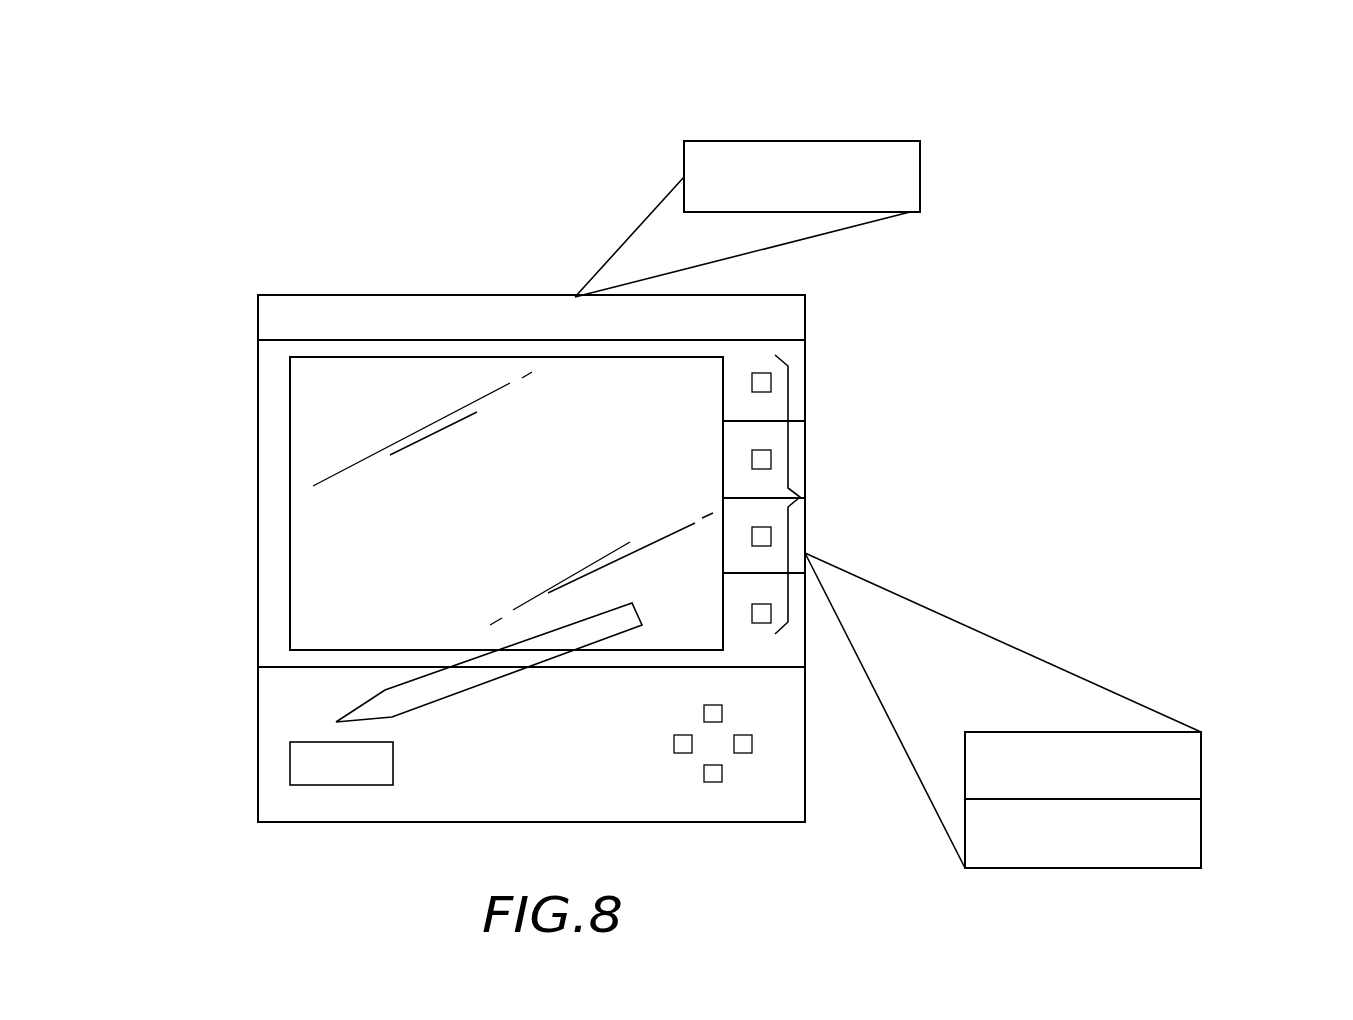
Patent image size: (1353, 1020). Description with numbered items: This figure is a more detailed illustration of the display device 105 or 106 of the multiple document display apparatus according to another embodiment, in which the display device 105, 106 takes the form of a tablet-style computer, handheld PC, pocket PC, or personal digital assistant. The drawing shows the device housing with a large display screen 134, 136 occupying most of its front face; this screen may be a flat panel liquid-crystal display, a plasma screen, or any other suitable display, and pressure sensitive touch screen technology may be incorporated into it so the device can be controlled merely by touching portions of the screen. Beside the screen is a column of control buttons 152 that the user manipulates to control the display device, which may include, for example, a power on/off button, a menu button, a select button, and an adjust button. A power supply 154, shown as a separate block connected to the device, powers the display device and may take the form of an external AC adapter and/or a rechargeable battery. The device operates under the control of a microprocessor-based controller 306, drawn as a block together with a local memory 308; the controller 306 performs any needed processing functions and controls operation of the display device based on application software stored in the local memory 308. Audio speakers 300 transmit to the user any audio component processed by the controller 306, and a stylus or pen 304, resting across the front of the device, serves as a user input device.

The display device 105 is at (531, 508).
The display device 106 is at (383, 295).
The display screen 134 is at (405, 503).
The display screen 136 is at (290, 532).
The control buttons 152 is at (802, 497).
The power supply 154 is at (892, 141).
The audio speakers 300 is at (510, 535).
The stylus or pen 304 is at (452, 695).
The microprocessor-based controller 306 is at (1203, 753).
The local memory 308 is at (1203, 832).